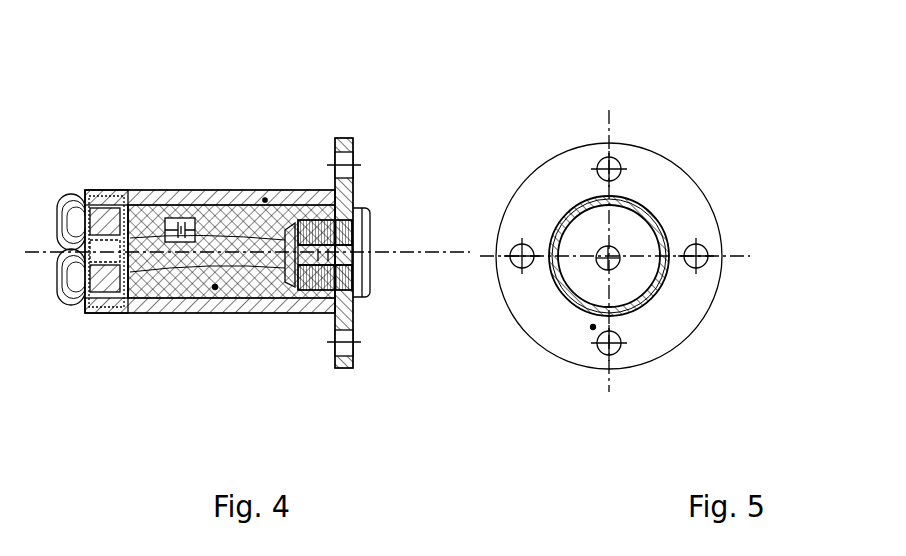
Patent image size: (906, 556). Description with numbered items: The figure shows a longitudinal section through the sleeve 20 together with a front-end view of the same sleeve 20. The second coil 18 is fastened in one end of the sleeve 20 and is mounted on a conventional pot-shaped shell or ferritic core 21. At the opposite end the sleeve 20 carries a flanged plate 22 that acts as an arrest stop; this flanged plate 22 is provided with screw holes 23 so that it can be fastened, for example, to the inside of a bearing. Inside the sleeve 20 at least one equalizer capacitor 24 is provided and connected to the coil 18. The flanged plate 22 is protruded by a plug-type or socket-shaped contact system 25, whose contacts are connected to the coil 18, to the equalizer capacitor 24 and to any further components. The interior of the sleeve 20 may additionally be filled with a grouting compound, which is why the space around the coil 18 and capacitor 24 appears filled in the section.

In FIG. 4, the second coil 18 is at (105, 303).
In FIG. 5, the second coil 18 is at (636, 302).
In FIG. 4, the sleeve 20 is at (265, 200).
In FIG. 5, the sleeve 20 is at (667, 280).
In FIG. 4, the ferritic core 21 is at (118, 218).
In FIG. 5, the ferritic core 21 is at (648, 207).
In FIG. 4, the flanged plate 22 is at (353, 360).
In FIG. 5, the flanged plate 22 is at (593, 327).
In FIG. 5, the screw holes 23 is at (613, 165).
In FIG. 4, the equalizer capacitor 24 is at (210, 197).
In FIG. 4, the contact system 25 is at (355, 212).